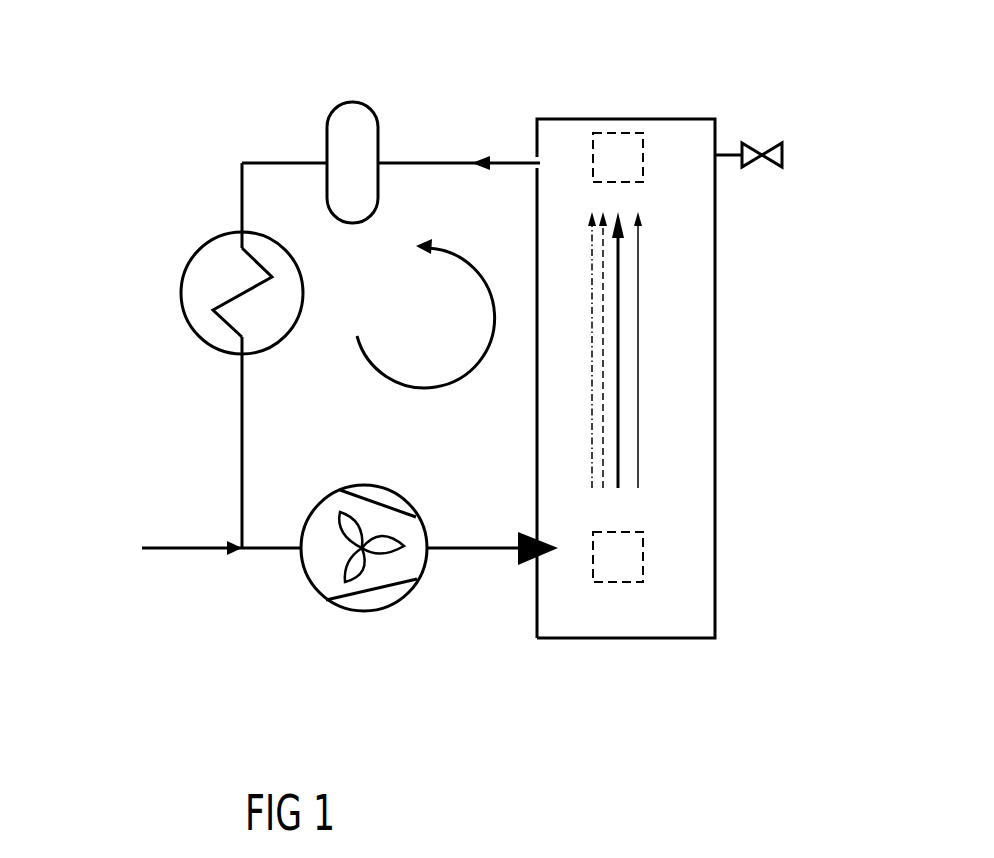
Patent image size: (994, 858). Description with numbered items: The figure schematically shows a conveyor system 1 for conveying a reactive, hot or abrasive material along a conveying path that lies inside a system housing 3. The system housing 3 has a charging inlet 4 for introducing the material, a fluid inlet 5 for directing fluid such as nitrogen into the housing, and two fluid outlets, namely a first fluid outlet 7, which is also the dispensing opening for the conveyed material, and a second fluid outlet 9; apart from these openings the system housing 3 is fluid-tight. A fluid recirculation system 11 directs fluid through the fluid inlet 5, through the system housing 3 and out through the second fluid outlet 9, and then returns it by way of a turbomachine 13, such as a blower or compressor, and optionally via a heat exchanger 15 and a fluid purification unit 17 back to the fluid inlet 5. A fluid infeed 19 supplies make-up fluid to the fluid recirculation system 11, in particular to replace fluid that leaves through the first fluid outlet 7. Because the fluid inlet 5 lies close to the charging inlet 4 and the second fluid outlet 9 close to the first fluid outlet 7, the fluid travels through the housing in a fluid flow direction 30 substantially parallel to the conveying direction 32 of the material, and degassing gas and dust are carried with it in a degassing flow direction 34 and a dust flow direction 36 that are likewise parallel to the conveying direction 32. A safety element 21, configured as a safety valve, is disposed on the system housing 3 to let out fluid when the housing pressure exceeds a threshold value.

The conveyor system 1 is at (212, 122).
The system housing 3 is at (715, 468).
The charging inlet 4 is at (613, 570).
The fluid inlet 5 is at (538, 560).
The first fluid outlet 7 is at (615, 142).
The second fluid outlet 9 is at (537, 164).
The fluid recirculation system 11 is at (458, 102).
The turbomachine 13 is at (323, 600).
The heat exchanger 15 is at (183, 314).
The fluid purification unit 17 is at (334, 103).
The fluid infeed 19 is at (145, 543).
The safety element 21 is at (782, 143).
The fluid flow direction 30 is at (638, 345).
The conveying direction 32 is at (618, 296).
The degassing flow direction 34 is at (603, 426).
The dust flow direction 36 is at (592, 383).